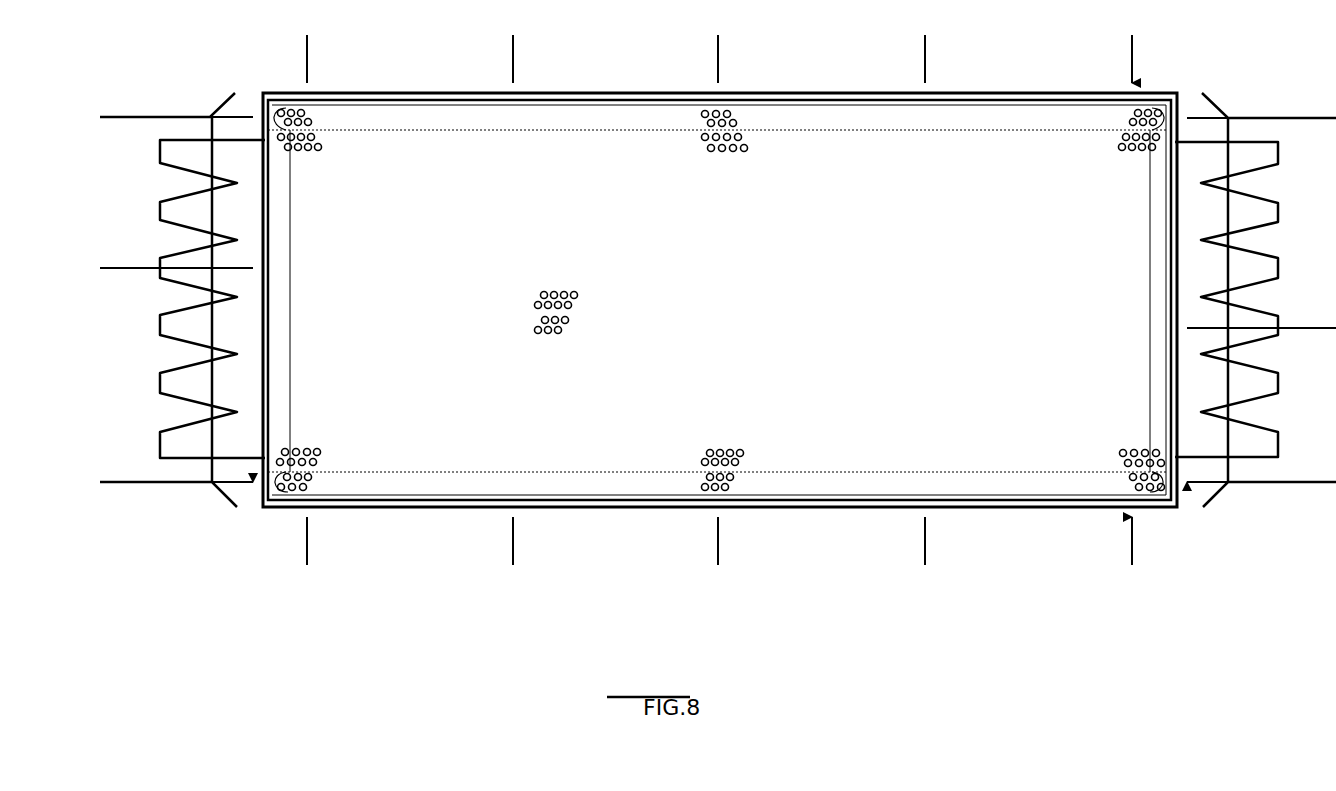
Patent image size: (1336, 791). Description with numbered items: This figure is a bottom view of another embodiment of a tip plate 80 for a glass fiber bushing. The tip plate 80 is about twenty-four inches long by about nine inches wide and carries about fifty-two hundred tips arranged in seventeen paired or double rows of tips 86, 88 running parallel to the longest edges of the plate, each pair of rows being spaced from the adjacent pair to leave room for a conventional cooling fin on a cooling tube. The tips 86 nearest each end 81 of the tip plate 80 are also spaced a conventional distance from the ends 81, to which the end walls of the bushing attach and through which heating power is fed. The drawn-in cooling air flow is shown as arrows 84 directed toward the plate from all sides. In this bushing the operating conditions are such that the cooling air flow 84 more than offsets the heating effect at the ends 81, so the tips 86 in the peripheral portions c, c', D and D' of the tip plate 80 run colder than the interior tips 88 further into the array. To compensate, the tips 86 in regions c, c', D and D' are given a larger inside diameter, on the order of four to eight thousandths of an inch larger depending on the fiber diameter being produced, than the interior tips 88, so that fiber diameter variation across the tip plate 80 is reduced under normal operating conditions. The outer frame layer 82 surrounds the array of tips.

The tip plate 80 is at (553, 103).
The end of the tip plate 81 is at (262, 318).
The outer frame layer 82 is at (808, 92).
The drawn-in cooling air flow 84 is at (307, 55).
The tips in the outer periphery 86 is at (1140, 112).
The interior tips 88 is at (700, 140).
The peripheral portion C c is at (412, 71).
The peripheral portion C' c' is at (993, 541).
The peripheral portion D is at (187, 407).
The peripheral portion D' is at (1232, 396).